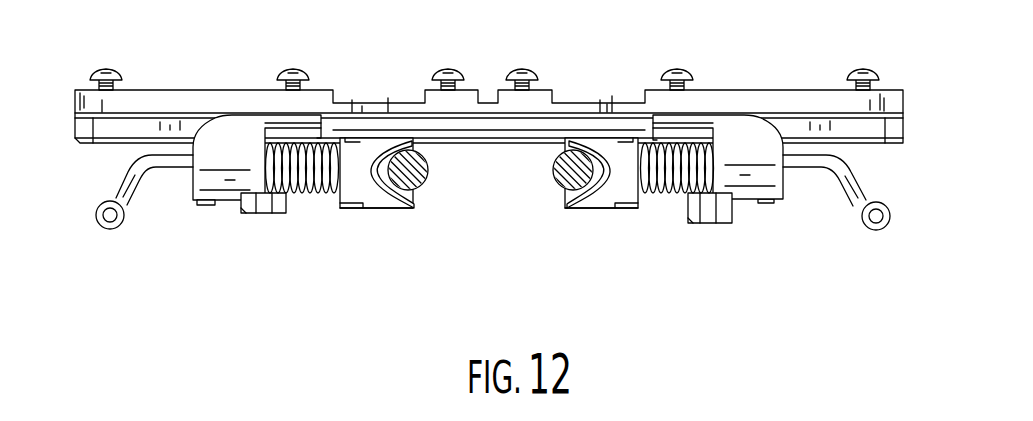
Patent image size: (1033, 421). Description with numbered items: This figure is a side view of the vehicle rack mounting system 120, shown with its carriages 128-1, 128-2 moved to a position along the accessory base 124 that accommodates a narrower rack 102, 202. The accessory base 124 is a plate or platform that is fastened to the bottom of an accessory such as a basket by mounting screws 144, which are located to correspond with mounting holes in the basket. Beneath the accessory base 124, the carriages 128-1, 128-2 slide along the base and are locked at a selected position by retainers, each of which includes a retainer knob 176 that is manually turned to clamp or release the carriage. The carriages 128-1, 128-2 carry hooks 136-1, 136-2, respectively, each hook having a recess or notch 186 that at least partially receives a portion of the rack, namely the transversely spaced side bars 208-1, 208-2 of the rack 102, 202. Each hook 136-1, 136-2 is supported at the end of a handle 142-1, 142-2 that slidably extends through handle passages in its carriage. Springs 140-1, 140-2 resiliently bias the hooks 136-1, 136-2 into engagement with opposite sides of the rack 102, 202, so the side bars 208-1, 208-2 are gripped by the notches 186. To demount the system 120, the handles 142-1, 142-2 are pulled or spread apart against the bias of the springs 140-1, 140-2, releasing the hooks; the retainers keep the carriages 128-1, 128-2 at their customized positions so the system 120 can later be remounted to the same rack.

The vehicle rack mounting system 120 is at (55, 95).
The accessory base 124 is at (897, 98).
The mounting screws 144 is at (113, 71).
The carriage 128-1 is at (192, 205).
The carriage 128-2 is at (747, 137).
The handle 142-1 is at (121, 192).
The handle 142-2 is at (864, 186).
The retainer knob 176 is at (240, 206).
The spring 140-1 is at (310, 195).
The spring 140-2 is at (690, 208).
The hook 136-1 is at (358, 206).
The hook 136-2 is at (640, 210).
The notch 186 is at (410, 194).
The side bar 208-1 is at (413, 200).
The side bar 208-2 is at (560, 193).
The rack 102 is at (491, 189).
The front bicycle rack 202 is at (437, 178).